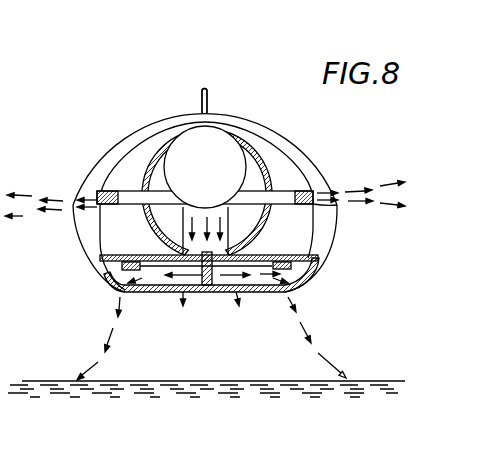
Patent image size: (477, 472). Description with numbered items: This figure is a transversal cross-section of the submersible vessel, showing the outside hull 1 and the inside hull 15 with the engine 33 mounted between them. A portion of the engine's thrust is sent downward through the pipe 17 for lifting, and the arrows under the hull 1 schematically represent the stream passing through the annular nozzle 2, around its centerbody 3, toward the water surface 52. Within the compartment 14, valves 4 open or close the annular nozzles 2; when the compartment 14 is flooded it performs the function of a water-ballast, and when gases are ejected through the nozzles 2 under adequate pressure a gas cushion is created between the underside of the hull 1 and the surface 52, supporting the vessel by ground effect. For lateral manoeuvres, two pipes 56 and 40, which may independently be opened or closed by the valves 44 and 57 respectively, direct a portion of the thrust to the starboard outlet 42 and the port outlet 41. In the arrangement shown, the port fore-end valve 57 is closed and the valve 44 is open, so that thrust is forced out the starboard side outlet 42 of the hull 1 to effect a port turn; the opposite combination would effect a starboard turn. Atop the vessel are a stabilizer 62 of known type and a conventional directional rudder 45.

The hull 1 is at (263, 130).
The annular nozzle 2 is at (130, 292).
The centerbody 3 is at (210, 292).
The valve 4 is at (117, 290).
The compartment 14 is at (306, 268).
The inside hull 15 is at (274, 183).
The pipe 17 is at (218, 231).
The engine 33 is at (187, 152).
The pipe 40 is at (297, 190).
The port outlet 41 is at (314, 191).
The starboard outlet 42 is at (97, 197).
The valve 44 is at (99, 178).
The directional rudder 45 is at (204, 101).
The surface 52 is at (372, 381).
The pipe 56 is at (128, 191).
The valve 57 is at (313, 200).
The stabilizer 62 is at (207, 104).